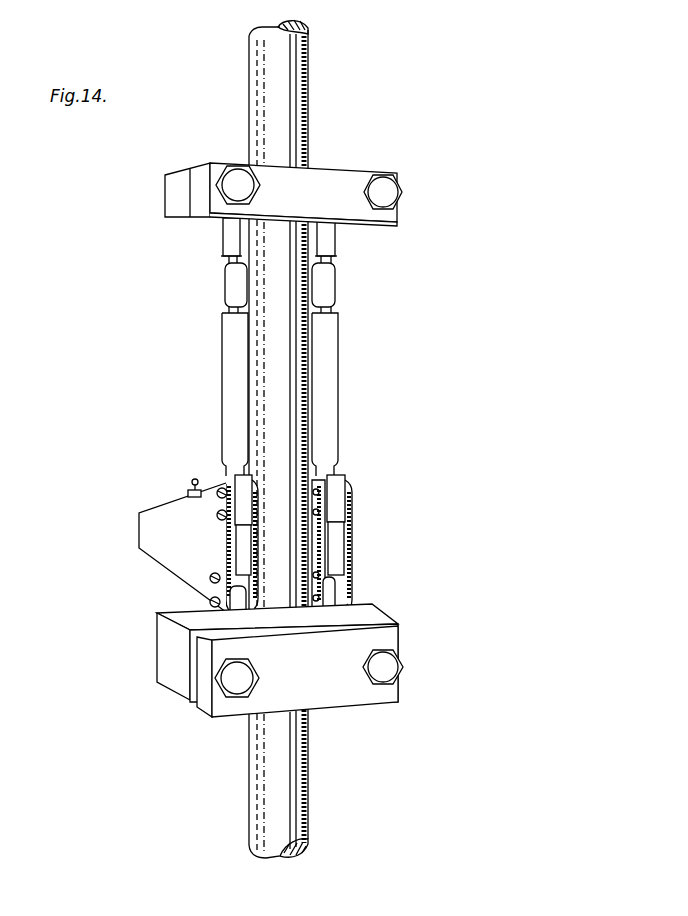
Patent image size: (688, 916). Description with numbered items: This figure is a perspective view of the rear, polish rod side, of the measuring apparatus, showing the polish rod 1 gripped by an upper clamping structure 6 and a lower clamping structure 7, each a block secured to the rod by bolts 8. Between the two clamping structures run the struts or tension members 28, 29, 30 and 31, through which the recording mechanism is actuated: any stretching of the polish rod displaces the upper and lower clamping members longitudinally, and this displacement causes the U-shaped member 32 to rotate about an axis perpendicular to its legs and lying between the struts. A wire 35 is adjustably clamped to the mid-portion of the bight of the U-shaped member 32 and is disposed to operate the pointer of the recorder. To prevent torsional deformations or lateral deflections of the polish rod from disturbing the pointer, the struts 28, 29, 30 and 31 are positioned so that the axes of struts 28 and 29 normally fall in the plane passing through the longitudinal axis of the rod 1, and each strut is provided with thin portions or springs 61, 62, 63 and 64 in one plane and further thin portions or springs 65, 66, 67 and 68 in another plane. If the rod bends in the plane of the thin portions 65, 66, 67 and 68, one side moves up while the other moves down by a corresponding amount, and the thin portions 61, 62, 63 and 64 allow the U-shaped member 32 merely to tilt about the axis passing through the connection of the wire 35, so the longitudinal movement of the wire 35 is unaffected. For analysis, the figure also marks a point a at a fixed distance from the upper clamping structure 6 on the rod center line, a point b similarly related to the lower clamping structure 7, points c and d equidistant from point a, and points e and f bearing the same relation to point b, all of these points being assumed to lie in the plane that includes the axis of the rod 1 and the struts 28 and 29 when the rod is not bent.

The rod 1 is at (309, 151).
The upper clamping structure 6 is at (366, 172).
The lower clamping structure 7 is at (399, 640).
The bolts 8 is at (240, 690).
The strut 28 is at (339, 331).
The strut 29 is at (223, 332).
The strut 30 is at (350, 602).
The strut 31 is at (176, 628).
The U-shaped member 32 is at (146, 531).
The wire 35 is at (190, 480).
The thin portion or spring 61 is at (322, 628).
The thin portion or spring 62 is at (244, 625).
The thin portion or spring 63 is at (336, 290).
The thin portion or spring 64 is at (232, 287).
The thin portion or spring 65 is at (338, 545).
The thin portion or spring 66 is at (240, 549).
The thin portion or spring 67 is at (336, 244).
The thin portion or spring 68 is at (226, 242).
The point a is at (283, 290).
The point b is at (283, 612).
The point c is at (264, 210).
The point d is at (326, 210).
The point e is at (226, 634).
The point f is at (290, 650).